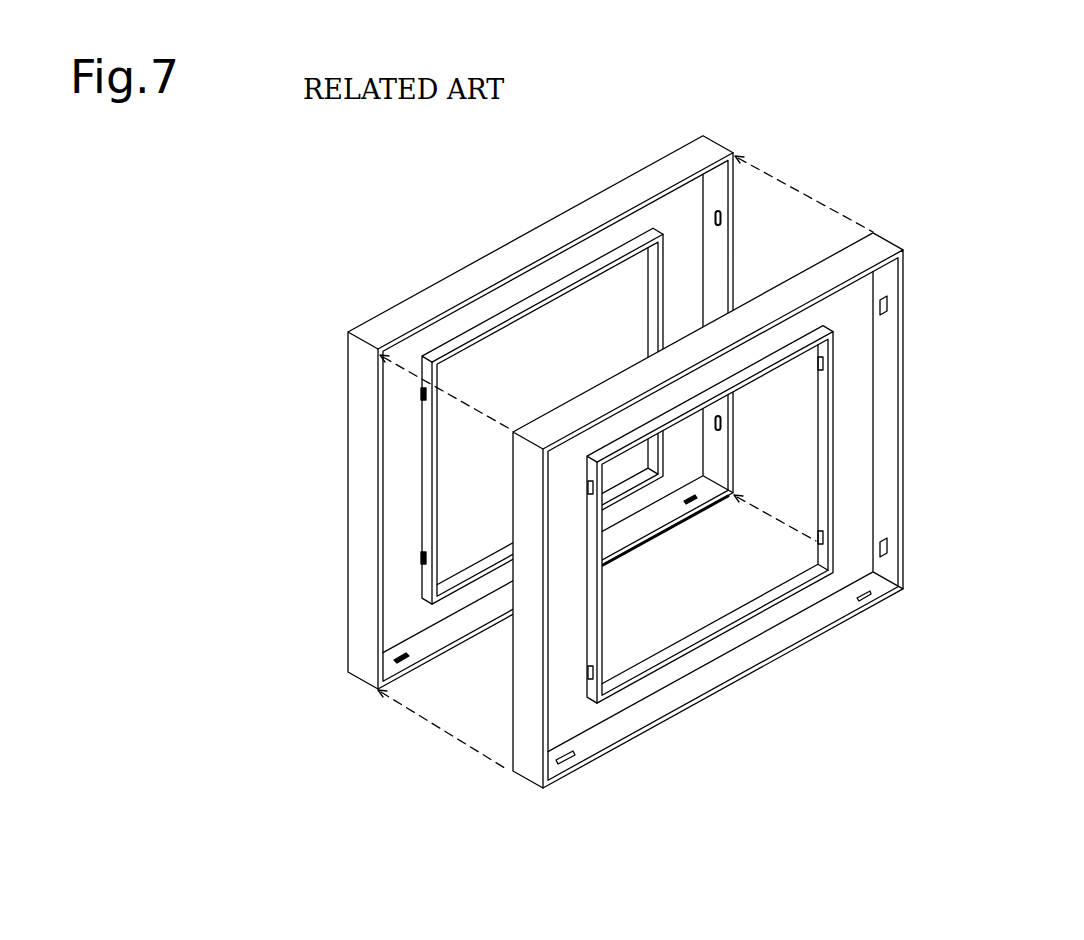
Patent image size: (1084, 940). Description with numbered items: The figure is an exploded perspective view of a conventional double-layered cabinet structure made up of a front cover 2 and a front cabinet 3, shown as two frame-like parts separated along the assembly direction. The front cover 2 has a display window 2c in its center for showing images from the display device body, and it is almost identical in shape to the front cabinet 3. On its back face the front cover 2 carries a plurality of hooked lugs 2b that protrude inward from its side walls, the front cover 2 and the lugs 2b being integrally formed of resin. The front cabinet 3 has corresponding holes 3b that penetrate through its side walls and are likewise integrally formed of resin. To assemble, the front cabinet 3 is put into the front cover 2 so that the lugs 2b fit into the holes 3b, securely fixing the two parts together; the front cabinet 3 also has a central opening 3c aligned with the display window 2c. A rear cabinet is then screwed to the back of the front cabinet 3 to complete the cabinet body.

The front cover 2 is at (403, 292).
The hooked lugs 2b is at (722, 219).
The display window 2c is at (613, 471).
The front cabinet 3 is at (550, 402).
The holes 3b is at (880, 304).
The opening of second frame 3c is at (705, 587).